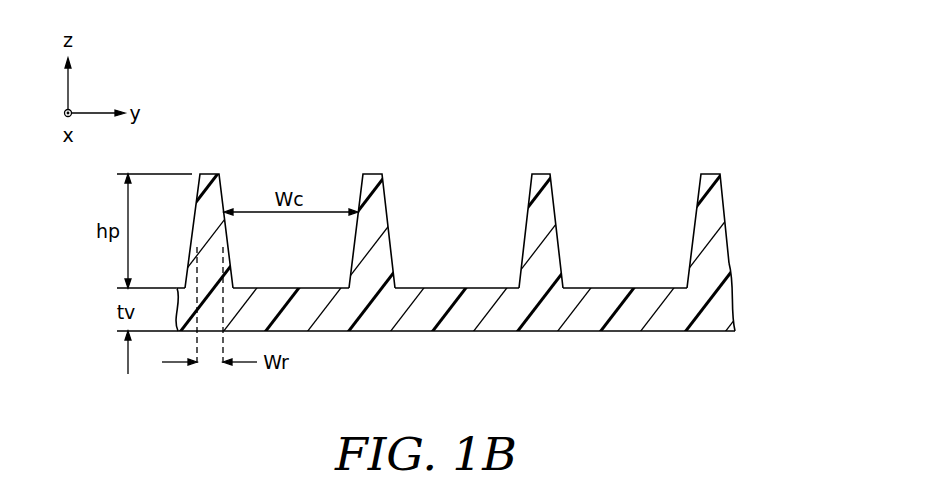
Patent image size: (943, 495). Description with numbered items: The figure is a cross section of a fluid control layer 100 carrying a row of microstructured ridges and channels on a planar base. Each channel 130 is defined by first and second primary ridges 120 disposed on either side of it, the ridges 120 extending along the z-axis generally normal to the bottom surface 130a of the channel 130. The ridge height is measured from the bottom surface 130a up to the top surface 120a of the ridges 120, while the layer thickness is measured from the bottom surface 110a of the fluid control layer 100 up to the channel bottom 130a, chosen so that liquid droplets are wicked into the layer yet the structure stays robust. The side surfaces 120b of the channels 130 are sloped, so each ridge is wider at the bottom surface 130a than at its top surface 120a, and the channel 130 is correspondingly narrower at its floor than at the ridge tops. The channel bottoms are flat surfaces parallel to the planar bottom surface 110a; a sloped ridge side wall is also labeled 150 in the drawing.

The fluid control layer 100 is at (718, 254).
The bottom surface of the fluid control layer 110a is at (369, 332).
The primary ridges 120 is at (722, 150).
The top surface of the ridges 120a is at (210, 172).
The side surfaces of the channels 120b is at (386, 197).
The channels 130 is at (460, 158).
The bottom surface of the channel 130a is at (282, 287).
The rib side wall surface 150 is at (521, 258).